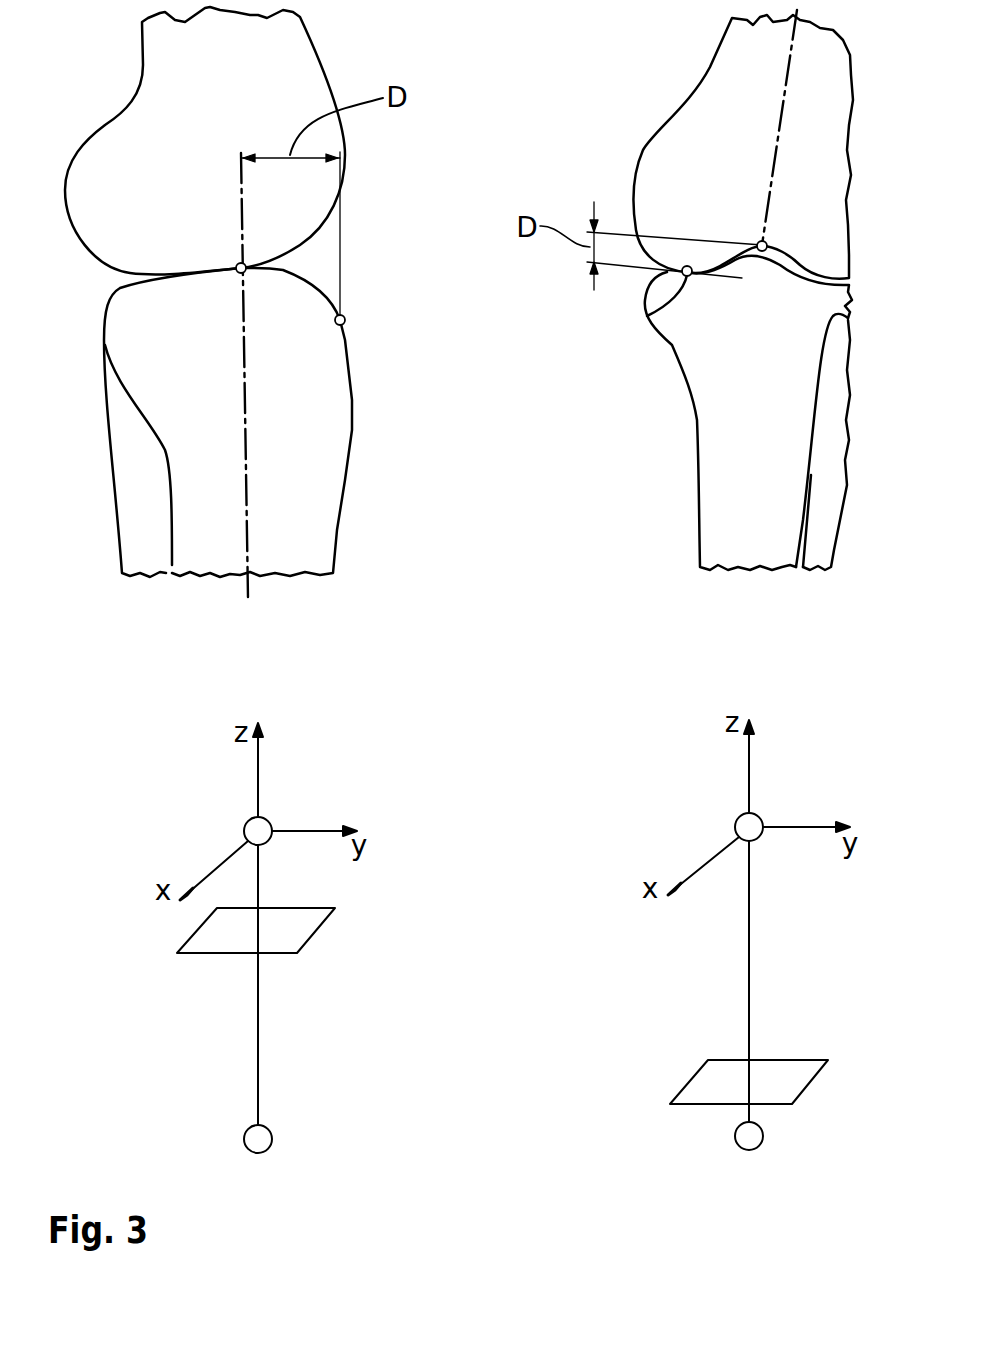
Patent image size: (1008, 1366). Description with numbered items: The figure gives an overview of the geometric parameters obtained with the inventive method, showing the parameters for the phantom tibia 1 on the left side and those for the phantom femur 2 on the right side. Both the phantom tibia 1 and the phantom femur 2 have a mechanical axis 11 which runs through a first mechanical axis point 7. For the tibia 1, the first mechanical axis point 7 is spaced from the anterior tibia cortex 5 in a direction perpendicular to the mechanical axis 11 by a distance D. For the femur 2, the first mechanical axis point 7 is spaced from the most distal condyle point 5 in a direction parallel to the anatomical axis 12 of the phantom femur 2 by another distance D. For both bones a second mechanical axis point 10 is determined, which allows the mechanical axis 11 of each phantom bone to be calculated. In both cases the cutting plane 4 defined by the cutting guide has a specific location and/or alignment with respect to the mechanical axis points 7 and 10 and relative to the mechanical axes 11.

The phantom tibia 1 is at (162, 367).
The phantom femur 2 is at (110, 160).
The cutting plane 4 is at (290, 938).
The anterior tibia cortex / most distal condyle point 5 is at (343, 319).
The first mechanical axis point 7 is at (245, 271).
The second mechanical axis point 10 is at (258, 1139).
The mechanical axis 11 is at (247, 417).
The anatomical axis 12 is at (787, 75).